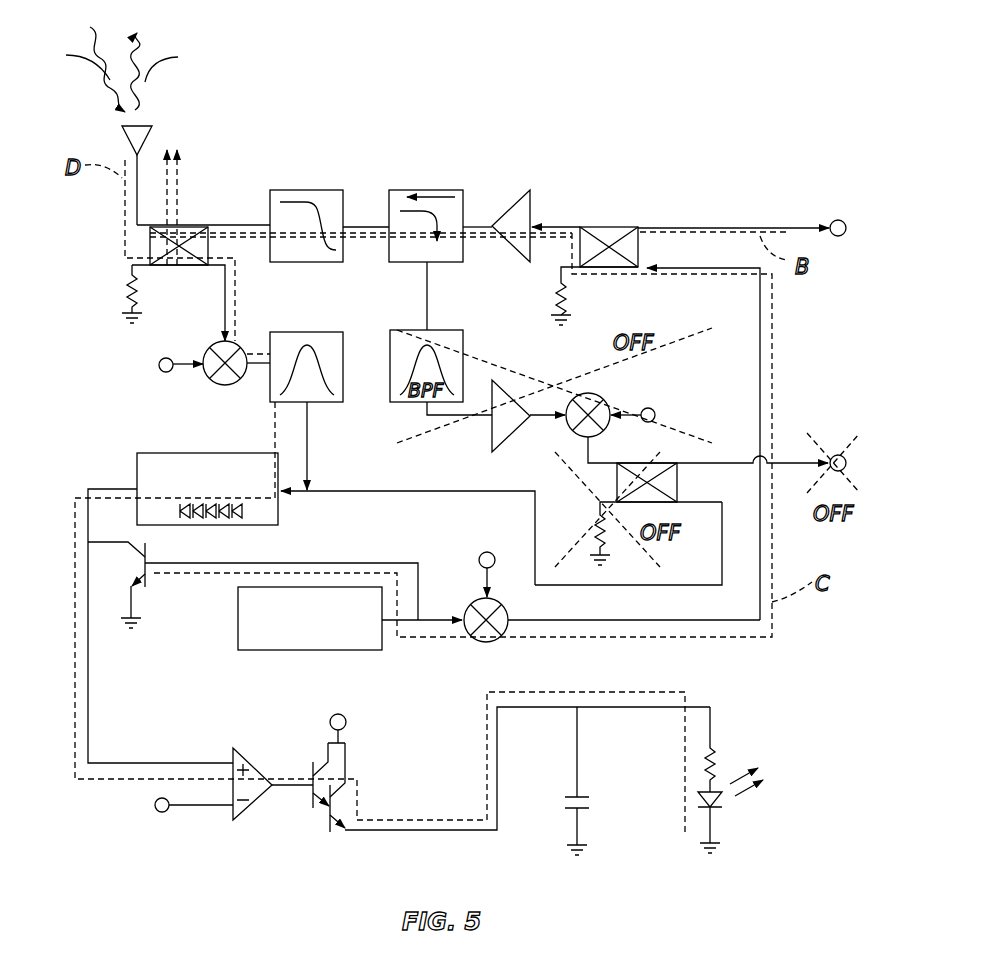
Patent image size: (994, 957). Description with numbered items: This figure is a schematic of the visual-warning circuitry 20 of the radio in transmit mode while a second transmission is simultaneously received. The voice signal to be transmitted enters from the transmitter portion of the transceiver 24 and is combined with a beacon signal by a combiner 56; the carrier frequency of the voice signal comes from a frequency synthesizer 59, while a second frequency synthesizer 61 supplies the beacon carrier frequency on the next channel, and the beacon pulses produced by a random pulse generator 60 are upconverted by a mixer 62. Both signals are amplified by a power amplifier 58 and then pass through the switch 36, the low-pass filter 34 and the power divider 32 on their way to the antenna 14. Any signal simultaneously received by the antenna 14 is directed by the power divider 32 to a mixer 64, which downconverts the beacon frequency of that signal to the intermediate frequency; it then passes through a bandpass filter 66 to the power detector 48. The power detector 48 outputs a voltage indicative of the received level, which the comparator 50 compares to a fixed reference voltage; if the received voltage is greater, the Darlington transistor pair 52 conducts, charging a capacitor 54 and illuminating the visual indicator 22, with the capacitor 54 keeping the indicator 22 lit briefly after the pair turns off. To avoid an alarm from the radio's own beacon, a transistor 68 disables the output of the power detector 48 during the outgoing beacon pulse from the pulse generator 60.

The antenna 14 is at (120, 140).
The visual-warning circuitry 20 is at (628, 104).
The visual indicator 22 is at (699, 804).
The transceiver 24 is at (838, 219).
The power divider 32 is at (148, 240).
The low-pass filter 34 is at (300, 190).
The switch 36 is at (425, 190).
The power detector 48 is at (170, 453).
The comparator 50 is at (258, 800).
The Darlington transistor pair 52 is at (326, 713).
The capacitor 54 is at (562, 803).
The combiner 56 is at (612, 228).
The power amplifier 58 is at (527, 192).
The frequency synthesizer 59 is at (648, 423).
The random pulse generator 60 is at (345, 587).
The second frequency synthesizer 61 is at (152, 368).
The mixer 62 is at (471, 603).
The mixer 64 is at (216, 341).
The bandpass filter 66 is at (320, 403).
The transistor 68 is at (142, 588).